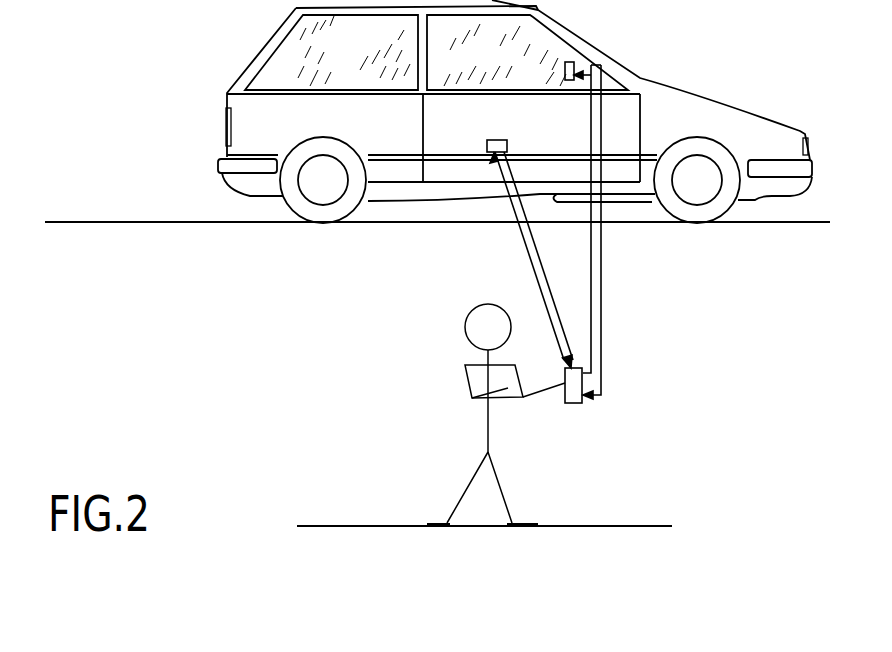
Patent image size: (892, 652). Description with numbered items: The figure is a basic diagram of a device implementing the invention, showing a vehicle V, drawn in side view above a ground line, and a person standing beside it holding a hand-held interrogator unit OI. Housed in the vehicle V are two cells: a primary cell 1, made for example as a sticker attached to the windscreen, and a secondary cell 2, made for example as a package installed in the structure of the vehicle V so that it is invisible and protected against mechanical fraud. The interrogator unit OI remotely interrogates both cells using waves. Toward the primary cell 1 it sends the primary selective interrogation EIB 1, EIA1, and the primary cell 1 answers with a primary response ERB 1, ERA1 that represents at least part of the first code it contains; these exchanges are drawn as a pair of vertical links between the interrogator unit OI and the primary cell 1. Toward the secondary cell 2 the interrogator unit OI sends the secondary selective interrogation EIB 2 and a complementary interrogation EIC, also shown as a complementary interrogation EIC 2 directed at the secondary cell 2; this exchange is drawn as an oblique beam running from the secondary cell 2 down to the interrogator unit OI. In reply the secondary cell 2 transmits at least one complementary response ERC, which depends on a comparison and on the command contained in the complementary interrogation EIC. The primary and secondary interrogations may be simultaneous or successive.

The vehicle V is at (704, 100).
The primary cell 1 is at (567, 61).
The secondary cell 2 is at (492, 140).
The interrogator unit OI is at (575, 404).
The complementary interrogation EIC is at (521, 236).
The secondary selective interrogation EIB 2 is at (478, 260).
The complementary response ERC is at (542, 267).
The complementary interrogation of the secondary cell EIC 2 is at (478, 260).
The primary response ERB 1 is at (603, 258).
The primary response ERA1 is at (677, 232).
The primary selective interrogation EIB 1 is at (593, 302).
The primary selective interrogation EIA1 is at (587, 232).